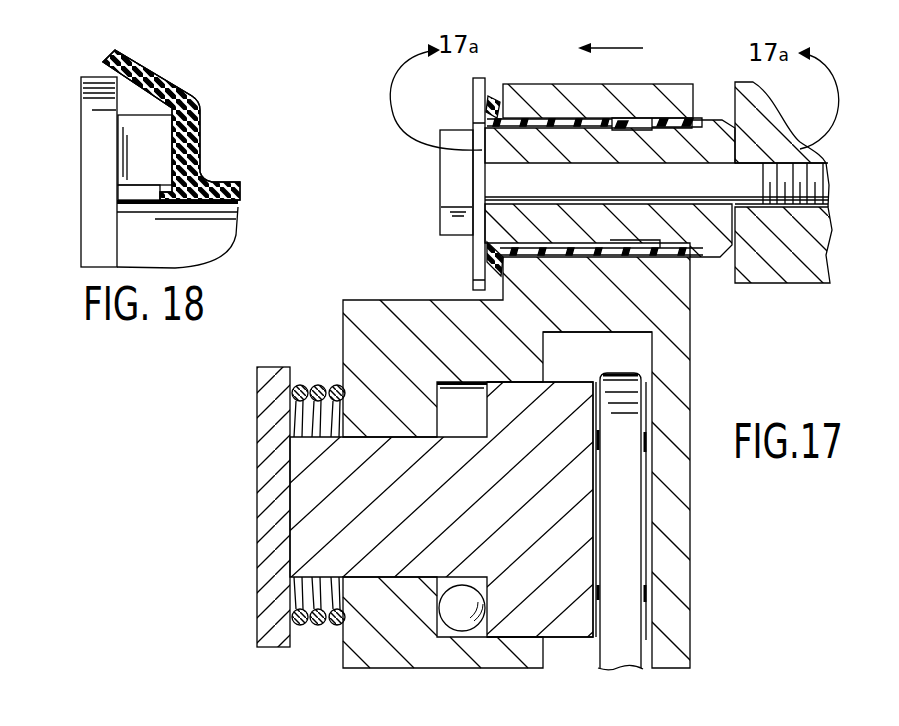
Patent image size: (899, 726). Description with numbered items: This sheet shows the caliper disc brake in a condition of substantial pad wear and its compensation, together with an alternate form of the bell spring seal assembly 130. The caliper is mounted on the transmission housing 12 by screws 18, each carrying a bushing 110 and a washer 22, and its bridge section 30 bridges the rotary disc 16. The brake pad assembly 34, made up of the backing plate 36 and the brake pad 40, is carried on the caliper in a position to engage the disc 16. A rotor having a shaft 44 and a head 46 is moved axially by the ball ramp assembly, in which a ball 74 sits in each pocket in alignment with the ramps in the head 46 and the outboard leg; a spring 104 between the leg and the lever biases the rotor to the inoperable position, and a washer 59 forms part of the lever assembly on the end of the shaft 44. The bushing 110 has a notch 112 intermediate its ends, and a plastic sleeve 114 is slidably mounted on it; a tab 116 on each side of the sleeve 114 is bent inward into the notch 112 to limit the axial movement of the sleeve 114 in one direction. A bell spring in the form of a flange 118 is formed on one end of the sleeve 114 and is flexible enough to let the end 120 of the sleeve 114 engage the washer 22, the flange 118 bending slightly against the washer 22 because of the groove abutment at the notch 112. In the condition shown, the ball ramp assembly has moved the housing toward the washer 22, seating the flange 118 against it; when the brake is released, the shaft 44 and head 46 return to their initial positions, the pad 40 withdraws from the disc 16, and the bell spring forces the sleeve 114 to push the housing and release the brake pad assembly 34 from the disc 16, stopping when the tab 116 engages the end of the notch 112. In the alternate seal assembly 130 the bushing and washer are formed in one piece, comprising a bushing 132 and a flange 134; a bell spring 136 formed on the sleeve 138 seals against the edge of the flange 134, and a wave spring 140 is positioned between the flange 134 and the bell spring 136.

In FIG. 17, the transmission housing 12 is at (778, 284).
In FIG. 17, the rotary disc 16 is at (616, 368).
In FIG. 17, the screws 18 is at (440, 187).
In FIG. 17, the washer 22 is at (472, 80).
In FIG. 17, the bridge section 30 is at (588, 82).
In FIG. 17, the brake pad assembly 34 is at (655, 597).
In FIG. 17, the backing plate 36 is at (693, 537).
In FIG. 17, the brake pad 40 is at (598, 638).
In FIG. 17, the shaft 44 is at (405, 509).
In FIG. 17, the head 46 is at (534, 437).
In FIG. 17, the washer 59 is at (271, 366).
In FIG. 17, the ball 74 is at (458, 626).
In FIG. 17, the spring 104 is at (318, 386).
In FIG. 17, the bushing 110 is at (712, 128).
In FIG. 17, the notch 112 is at (663, 150).
In FIG. 17, the plastic sleeve 114 is at (551, 115).
In FIG. 17, the tab 116 is at (645, 118).
In FIG. 17, the flange 118 is at (490, 105).
In FIG. 17, the end of the sleeve 120 is at (482, 116).
In FIG. 18, the bell spring seal assembly 130 is at (232, 130).
In FIG. 18, the bushing 132 is at (220, 234).
In FIG. 18, the flange 134 is at (80, 108).
In FIG. 18, the bell spring 136 is at (133, 66).
In FIG. 18, the sleeve 138 is at (230, 181).
In FIG. 18, the wave spring 140 is at (165, 146).